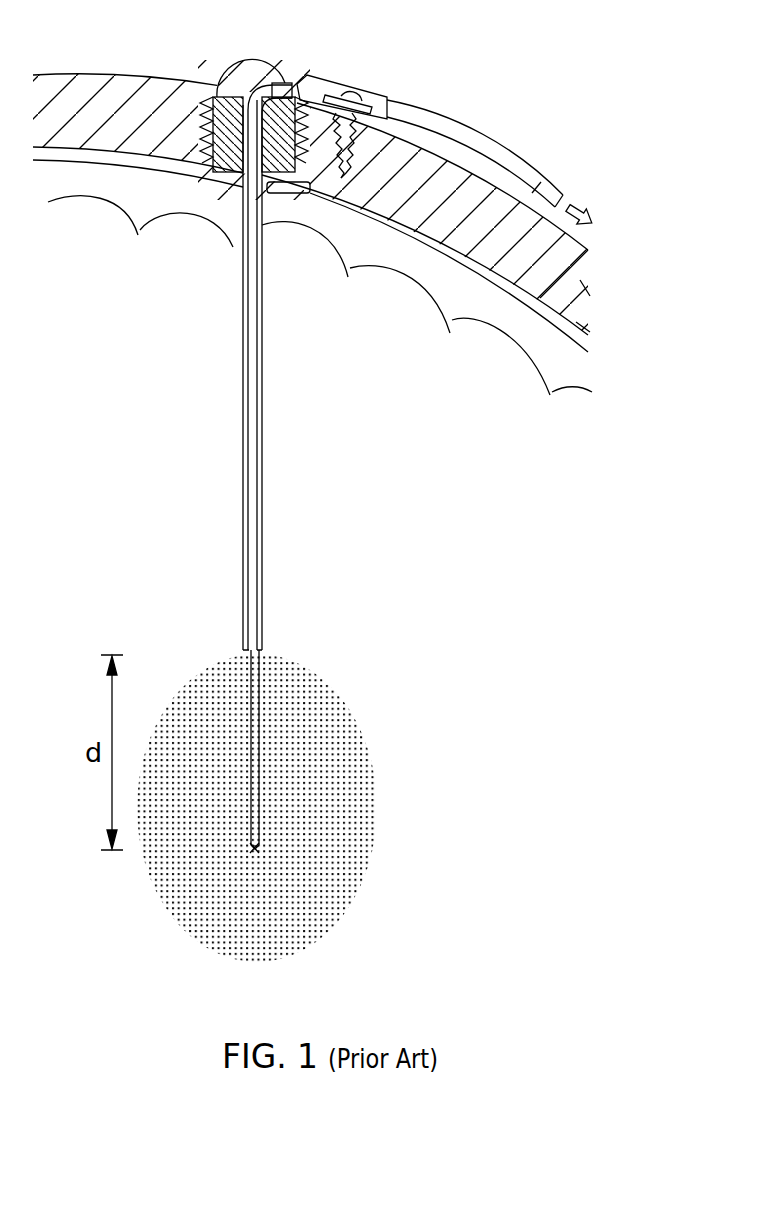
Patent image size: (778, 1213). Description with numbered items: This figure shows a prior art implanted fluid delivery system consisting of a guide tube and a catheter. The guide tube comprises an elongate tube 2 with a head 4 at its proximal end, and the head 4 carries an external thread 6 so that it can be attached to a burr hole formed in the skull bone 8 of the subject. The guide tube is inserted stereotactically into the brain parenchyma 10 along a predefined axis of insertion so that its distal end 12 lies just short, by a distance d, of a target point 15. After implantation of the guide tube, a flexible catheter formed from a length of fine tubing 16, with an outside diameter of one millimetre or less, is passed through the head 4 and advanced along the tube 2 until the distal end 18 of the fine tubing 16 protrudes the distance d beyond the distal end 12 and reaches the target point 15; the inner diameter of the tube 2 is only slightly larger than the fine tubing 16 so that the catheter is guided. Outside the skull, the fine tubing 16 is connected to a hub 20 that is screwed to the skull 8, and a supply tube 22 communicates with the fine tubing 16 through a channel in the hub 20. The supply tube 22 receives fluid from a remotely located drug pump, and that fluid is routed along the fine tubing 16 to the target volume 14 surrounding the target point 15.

The elongate tube 2 is at (243, 418).
The head 4 is at (250, 69).
The external thread 6 is at (215, 91).
The skull bone 8 is at (568, 283).
The brain parenchyma 10 is at (402, 344).
The distal end 12 is at (314, 620).
The target volume 14 is at (337, 908).
The target point 15 is at (254, 849).
The fine tubing 16 is at (277, 82).
The distal end of the fine tube 18 is at (259, 847).
The hub 20 is at (328, 79).
The supply tube 22 is at (478, 137).